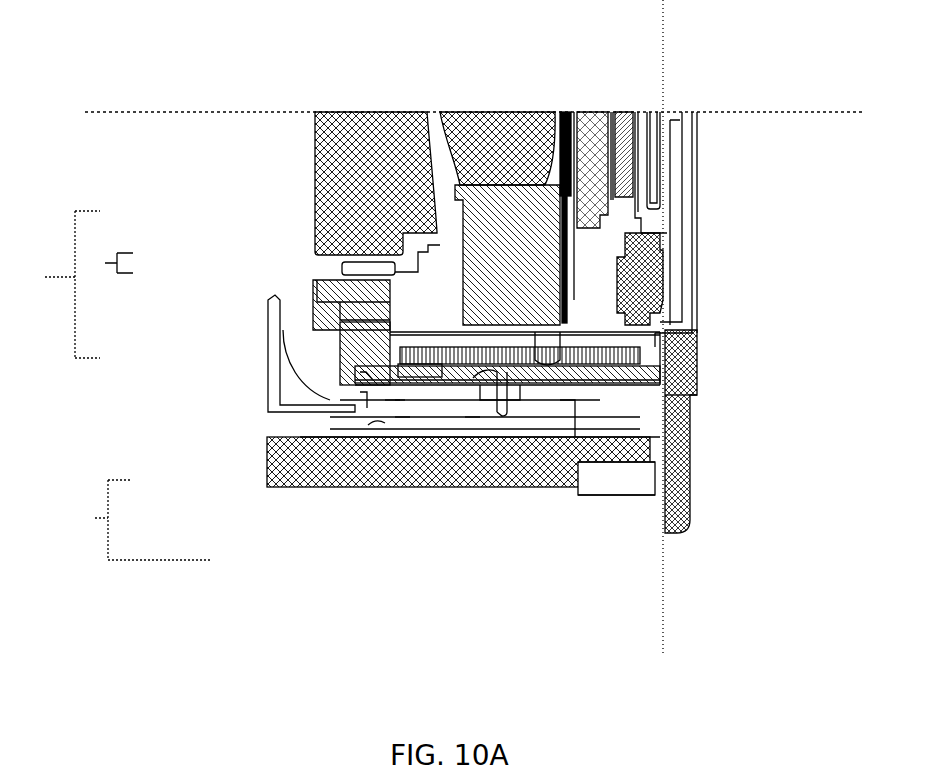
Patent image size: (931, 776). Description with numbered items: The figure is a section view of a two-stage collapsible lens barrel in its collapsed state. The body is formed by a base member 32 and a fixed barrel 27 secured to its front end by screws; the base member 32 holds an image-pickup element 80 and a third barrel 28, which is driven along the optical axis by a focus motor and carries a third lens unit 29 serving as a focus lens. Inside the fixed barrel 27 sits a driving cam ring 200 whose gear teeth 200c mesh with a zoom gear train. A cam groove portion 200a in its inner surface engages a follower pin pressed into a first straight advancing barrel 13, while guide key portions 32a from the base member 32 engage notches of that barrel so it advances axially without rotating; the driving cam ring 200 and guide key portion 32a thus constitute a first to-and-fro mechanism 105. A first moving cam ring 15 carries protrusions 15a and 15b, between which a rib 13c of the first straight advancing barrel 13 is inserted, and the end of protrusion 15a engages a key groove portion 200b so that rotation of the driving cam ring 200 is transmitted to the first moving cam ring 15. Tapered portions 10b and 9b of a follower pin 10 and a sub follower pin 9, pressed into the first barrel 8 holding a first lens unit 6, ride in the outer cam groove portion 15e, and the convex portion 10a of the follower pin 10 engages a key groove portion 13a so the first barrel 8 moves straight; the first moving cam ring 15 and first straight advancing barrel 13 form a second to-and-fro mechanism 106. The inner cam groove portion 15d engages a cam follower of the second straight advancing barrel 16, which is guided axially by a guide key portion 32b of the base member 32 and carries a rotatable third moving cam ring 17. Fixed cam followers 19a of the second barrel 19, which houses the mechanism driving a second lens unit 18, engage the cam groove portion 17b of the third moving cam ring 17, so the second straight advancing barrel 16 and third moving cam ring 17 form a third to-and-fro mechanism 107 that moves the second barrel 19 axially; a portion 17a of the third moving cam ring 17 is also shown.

The first lens unit 6 is at (325, 112).
The second lens unit 18 is at (472, 112).
The second barrel 19 is at (520, 112).
The third lens unit 29 is at (612, 112).
The image-pickup element 80 is at (652, 112).
The base member 32 is at (663, 267).
The fixed cam follower 19a is at (660, 295).
The third barrel 28 is at (688, 322).
The guide key portion 32b is at (690, 328).
The cam groove portion 17b is at (670, 352).
The tapered portion 10b is at (660, 380).
The protrusion 15a is at (643, 410).
The rib 13c is at (627, 423).
The first moving cam ring 15 is at (360, 298).
The second straight advancing barrel 16 is at (355, 336).
The third moving cam ring 17 is at (390, 333).
The first barrel 8 is at (330, 338).
The first straight advancing barrel 13 is at (270, 375).
The cam groove portion 15e is at (462, 312).
The driving cam ring 200 is at (268, 437).
The cam groove portion 200a is at (600, 455).
The key groove portion 200b is at (605, 440).
The gear teeth 200c is at (610, 495).
The protrusion 15b is at (568, 420).
The cam groove portion 15d is at (335, 445).
The key groove portion 13a is at (378, 440).
The terminal portion 17a is at (388, 445).
The fixed barrel 27 is at (400, 480).
The tapered portion 9b is at (455, 400).
The sub follower pin 9 is at (468, 385).
The follower pin 10 is at (468, 400).
The convex portion 10a is at (467, 480).
The guide key portion 32a is at (395, 400).
The first to-and-fro mechanism 105 is at (136, 520).
The second to-and-fro mechanism 106 is at (54, 284).
The third to-and-fro mechanism 107 is at (103, 263).